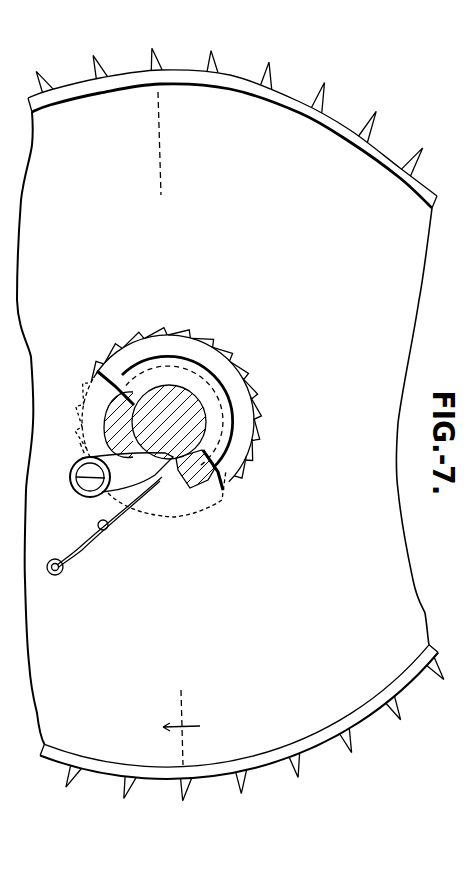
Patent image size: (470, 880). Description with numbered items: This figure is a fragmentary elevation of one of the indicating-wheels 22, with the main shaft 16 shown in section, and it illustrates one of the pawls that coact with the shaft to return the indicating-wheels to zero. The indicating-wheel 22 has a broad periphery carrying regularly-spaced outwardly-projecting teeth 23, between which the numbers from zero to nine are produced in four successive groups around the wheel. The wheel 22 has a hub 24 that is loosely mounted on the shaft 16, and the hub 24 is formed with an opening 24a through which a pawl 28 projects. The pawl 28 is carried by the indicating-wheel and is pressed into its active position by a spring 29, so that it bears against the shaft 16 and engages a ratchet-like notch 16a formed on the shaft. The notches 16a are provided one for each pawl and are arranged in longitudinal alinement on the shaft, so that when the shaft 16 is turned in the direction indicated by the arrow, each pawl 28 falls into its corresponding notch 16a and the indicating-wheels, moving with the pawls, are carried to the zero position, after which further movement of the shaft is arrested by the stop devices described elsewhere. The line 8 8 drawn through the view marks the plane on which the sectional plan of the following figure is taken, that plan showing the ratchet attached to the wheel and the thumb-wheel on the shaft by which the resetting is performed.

The line 8 8 is at (184, 812).
The main shaft 16 is at (193, 422).
The ratchet-like notches 16a is at (208, 478).
The indicating-wheel 22 is at (227, 424).
The teeth 23 is at (66, 787).
The hub 24 is at (185, 478).
The opening 24a is at (180, 490).
The pawl 28 is at (128, 482).
The spring 29 is at (90, 540).